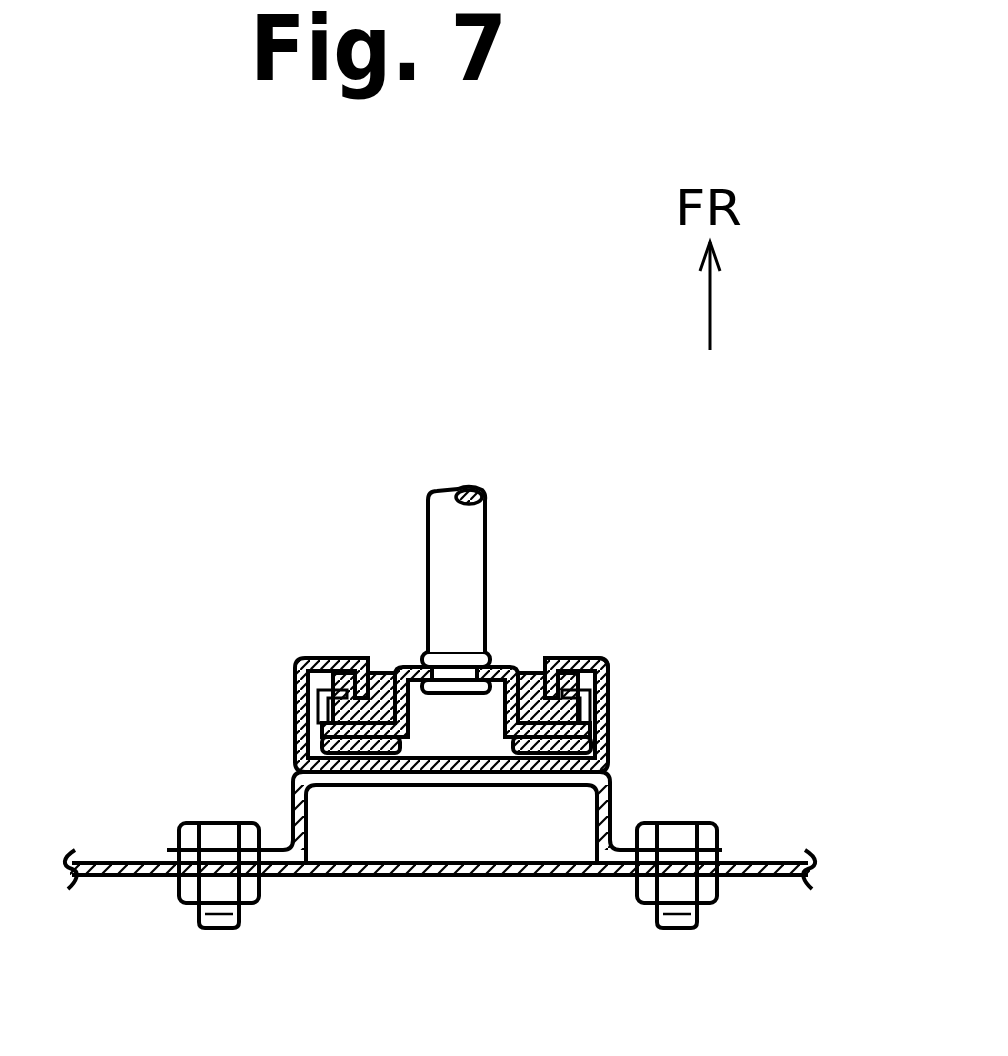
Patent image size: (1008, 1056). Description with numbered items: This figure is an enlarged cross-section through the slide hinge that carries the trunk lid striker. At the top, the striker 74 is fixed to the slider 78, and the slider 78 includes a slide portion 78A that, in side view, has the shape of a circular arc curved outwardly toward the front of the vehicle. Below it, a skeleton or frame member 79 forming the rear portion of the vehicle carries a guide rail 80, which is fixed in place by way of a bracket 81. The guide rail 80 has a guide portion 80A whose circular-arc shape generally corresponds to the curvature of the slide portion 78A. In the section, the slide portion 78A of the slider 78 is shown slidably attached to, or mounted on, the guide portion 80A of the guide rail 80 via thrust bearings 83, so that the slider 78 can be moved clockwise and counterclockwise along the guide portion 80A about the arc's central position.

The striker 74 is at (465, 567).
The slider 78 is at (403, 652).
The slide portion 78A is at (502, 705).
The frame member 79 is at (293, 802).
The guide rail 80 is at (623, 757).
The guide portion 80A is at (602, 660).
The bracket 81 is at (765, 860).
The thrust bearings 83 is at (362, 707).